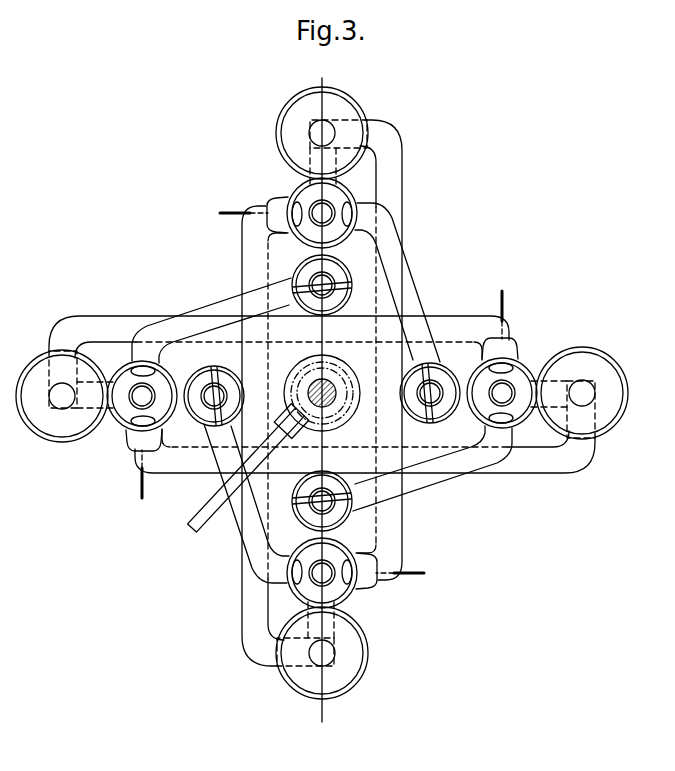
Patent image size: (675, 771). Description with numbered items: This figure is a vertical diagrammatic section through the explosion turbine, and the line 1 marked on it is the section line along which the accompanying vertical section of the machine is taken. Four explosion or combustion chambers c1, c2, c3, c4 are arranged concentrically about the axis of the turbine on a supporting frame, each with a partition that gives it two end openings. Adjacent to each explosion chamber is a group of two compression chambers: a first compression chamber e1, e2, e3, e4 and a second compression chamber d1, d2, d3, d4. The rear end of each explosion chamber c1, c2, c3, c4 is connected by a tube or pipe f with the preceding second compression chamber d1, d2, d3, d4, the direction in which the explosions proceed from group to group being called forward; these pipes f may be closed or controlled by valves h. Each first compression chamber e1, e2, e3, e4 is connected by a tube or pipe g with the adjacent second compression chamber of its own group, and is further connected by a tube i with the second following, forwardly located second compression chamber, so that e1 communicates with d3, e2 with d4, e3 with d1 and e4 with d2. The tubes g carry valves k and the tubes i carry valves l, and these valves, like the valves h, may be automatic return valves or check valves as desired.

The section line 1 is at (321, 403).
The first compression chamber e1 is at (322, 136).
The first compression chamber e2 is at (579, 393).
The first compression chamber e3 is at (322, 650).
The first compression chamber e4 is at (65, 396).
The second compression chamber d1 is at (312, 236).
The second compression chamber d2 is at (479, 407).
The second compression chamber d3 is at (335, 553).
The second compression chamber d4 is at (167, 377).
The explosion chamber c1 is at (313, 300).
The explosion chamber c2 is at (403, 397).
The explosion chamber c3 is at (312, 478).
The explosion chamber c4 is at (237, 405).
The tube or pipe f is at (412, 289).
The tube or pipe g is at (322, 160).
The valve h is at (330, 277).
The tube i is at (405, 193).
The valve k is at (330, 207).
The valve l is at (273, 220).